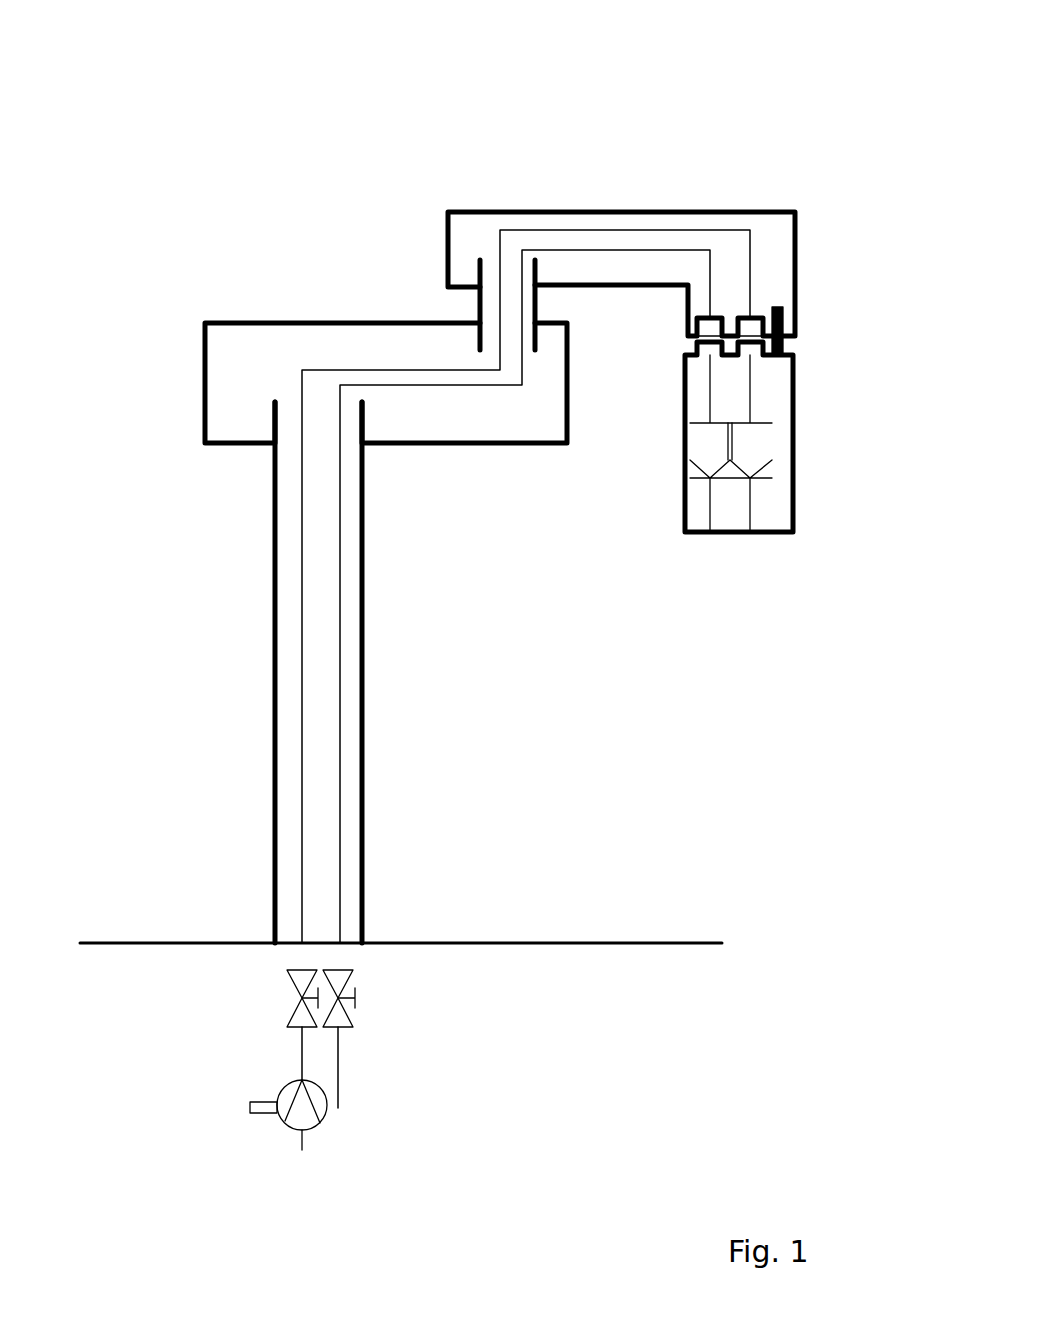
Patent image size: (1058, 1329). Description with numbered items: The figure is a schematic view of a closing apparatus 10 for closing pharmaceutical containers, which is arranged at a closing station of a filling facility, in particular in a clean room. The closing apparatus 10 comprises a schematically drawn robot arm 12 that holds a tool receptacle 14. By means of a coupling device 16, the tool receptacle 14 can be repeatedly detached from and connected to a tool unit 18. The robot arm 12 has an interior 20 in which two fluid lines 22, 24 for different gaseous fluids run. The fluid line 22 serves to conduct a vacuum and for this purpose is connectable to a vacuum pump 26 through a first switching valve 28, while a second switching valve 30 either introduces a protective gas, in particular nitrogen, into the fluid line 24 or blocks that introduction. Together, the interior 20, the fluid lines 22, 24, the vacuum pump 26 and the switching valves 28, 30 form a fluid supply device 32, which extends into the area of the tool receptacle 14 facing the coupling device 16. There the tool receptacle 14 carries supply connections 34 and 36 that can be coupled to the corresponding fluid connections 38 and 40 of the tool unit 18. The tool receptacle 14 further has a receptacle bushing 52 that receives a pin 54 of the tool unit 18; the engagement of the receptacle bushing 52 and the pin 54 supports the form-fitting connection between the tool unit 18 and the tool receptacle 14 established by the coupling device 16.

The closing apparatus 10 is at (142, 128).
The robot arm 12 is at (174, 455).
The tool receptacle 14 is at (822, 253).
The coupling device 16 is at (819, 344).
The tool unit 18 is at (820, 441).
The interior 20 is at (290, 790).
The fluid line 22 is at (305, 693).
The fluid line 24 is at (342, 762).
The vacuum pump 26 is at (285, 1133).
The first switching valve 28 is at (286, 998).
The second switching valve 30 is at (371, 1008).
The fluid supply device 32 is at (371, 1108).
The supply connection 34 is at (713, 318).
The supply connection 36 is at (752, 318).
The fluid connection 38 is at (708, 345).
The fluid connection 40 is at (745, 345).
The receptacle bushing 52 is at (778, 312).
The pin 54 is at (790, 352).